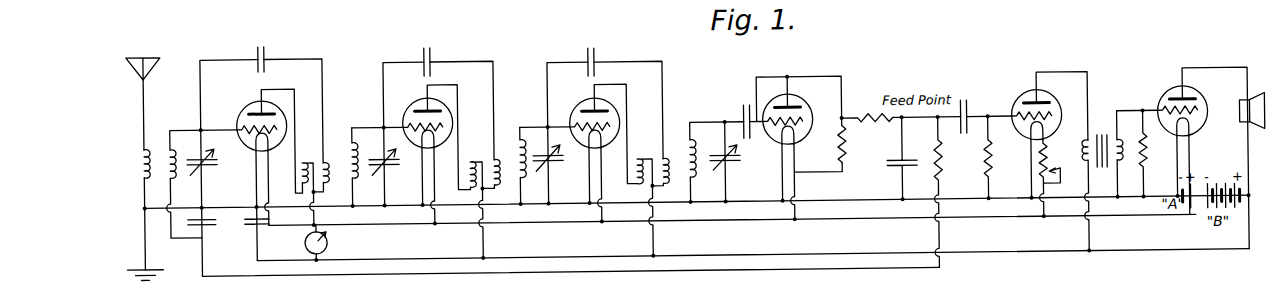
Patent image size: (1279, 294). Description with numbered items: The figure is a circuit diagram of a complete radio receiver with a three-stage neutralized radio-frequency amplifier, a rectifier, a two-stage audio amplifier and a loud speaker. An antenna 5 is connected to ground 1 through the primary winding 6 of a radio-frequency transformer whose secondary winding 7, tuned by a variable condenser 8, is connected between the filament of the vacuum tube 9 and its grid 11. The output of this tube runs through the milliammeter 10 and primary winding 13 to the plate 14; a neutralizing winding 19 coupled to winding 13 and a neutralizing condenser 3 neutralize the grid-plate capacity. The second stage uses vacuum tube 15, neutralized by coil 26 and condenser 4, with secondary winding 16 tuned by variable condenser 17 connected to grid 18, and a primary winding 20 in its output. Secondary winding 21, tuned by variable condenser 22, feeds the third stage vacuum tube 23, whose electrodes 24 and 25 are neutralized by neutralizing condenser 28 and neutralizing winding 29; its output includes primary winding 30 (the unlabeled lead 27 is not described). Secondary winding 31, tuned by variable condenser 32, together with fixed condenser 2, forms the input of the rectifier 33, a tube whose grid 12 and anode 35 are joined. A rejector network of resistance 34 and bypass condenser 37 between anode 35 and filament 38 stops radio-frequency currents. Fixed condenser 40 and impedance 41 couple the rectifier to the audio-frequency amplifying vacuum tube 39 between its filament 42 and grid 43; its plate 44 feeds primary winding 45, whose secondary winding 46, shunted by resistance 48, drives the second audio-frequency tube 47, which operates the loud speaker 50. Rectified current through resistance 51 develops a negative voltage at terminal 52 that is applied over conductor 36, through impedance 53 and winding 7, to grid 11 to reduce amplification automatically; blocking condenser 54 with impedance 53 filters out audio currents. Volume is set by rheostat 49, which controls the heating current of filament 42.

The ground 1 is at (150, 264).
The fixed condenser 2 is at (741, 119).
The neutralizing condenser 3 is at (266, 50).
The condenser 4 is at (434, 56).
The antenna 5 is at (152, 66).
The primary winding 6 is at (146, 143).
The secondary winding 7 is at (174, 150).
The variable condenser 8 is at (208, 162).
The vacuum tube 9 is at (272, 143).
The milliammeter 10 is at (304, 239).
The grid 11 is at (272, 137).
The grid 12 is at (795, 120).
The primary winding 13 is at (304, 158).
The plate 14 is at (272, 106).
The vacuum tube 15 is at (438, 146).
The secondary winding 16 is at (351, 138).
The variable condenser 17 is at (386, 164).
The grid 18 is at (429, 135).
The neutralizing winding 19 is at (323, 158).
The primary winding 20 is at (471, 158).
The secondary winding 21 is at (521, 136).
The variable condenser 22 is at (553, 163).
The vacuum tube 23 is at (604, 149).
The electrode 24 is at (595, 133).
The electrode 25 is at (604, 108).
The coil 26 is at (493, 156).
The filament lead 27 is at (584, 148).
The neutralizing condenser 28 is at (598, 56).
The neutralizing winding 29 is at (655, 186).
The primary winding 30 is at (638, 157).
The secondary winding 31 is at (690, 138).
The variable condenser 32 is at (730, 164).
The rectifier 33 is at (750, 134).
The resistance 34 is at (875, 118).
The anode 35 is at (771, 101).
The conductor 36 is at (400, 272).
The bypass condenser 37 is at (908, 163).
The filament 38 is at (797, 146).
The audio-frequency amplifying vacuum tube 39 is at (1050, 143).
The fixed condenser 40 is at (967, 104).
The impedance 41 is at (990, 192).
The filament 42 is at (993, 155).
The grid 43 is at (1042, 96).
The plate 44 is at (1047, 106).
The primary winding 45 is at (1115, 144).
The secondary winding 46 is at (1190, 158).
The audio-frequency tube 47 is at (1206, 132).
The resistance 48 is at (1146, 168).
The rheostat 49 is at (1049, 166).
The loud speaker 50 is at (1241, 108).
The resistance 51 is at (847, 146).
The terminal 52 is at (843, 119).
The impedance 53 is at (943, 163).
The blocking condenser 54 is at (206, 223).